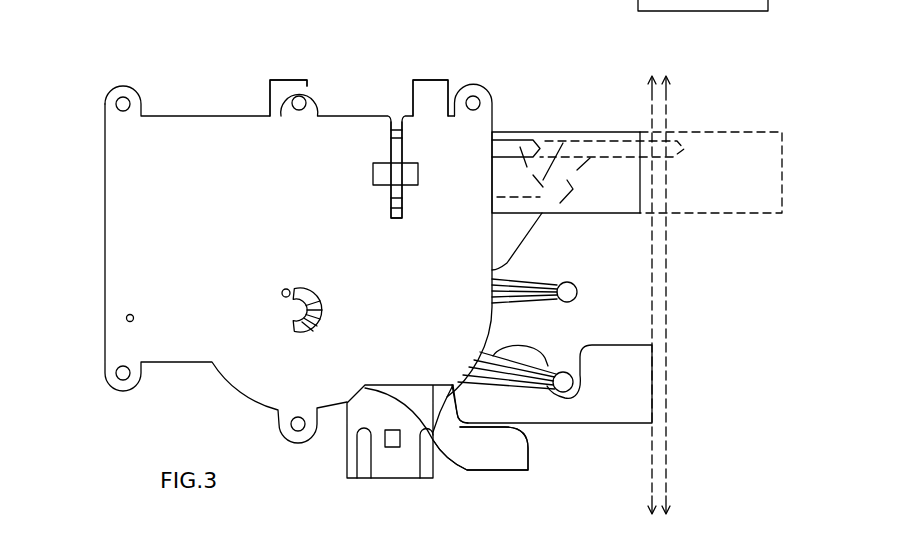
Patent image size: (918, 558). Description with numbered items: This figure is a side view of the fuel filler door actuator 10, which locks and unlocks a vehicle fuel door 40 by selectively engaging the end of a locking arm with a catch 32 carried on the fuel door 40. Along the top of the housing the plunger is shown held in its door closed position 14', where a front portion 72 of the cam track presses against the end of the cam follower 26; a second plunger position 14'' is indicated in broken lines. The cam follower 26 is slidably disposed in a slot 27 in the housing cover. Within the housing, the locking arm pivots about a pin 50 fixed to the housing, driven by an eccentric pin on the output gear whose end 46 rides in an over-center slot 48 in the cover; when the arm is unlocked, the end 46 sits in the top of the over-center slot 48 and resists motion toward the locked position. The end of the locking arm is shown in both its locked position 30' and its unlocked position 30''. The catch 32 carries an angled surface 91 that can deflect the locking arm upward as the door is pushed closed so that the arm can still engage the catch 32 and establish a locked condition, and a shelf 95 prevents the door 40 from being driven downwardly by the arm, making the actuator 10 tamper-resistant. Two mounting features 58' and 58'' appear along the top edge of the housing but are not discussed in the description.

The actuator 10 is at (188, 70).
The mounting tab 58' is at (281, 68).
The mounting block 58'' is at (431, 68).
The slot 27 is at (388, 138).
The cam follower 26 is at (419, 186).
The door closed position 14' is at (566, 170).
The front portion of the cam track 72 is at (567, 132).
The lever arm second position 14'' is at (724, 152).
The vehicle fuel door 40 is at (654, 317).
The unlocked position 30'' is at (559, 269).
The locked position 30' is at (517, 412).
The angled surface 91 is at (458, 382).
The catch 32 is at (603, 423).
The shelf 95 is at (490, 452).
The over-center slot 48 is at (298, 285).
The end of eccentric pin 46 is at (283, 292).
The pin 50 is at (126, 319).